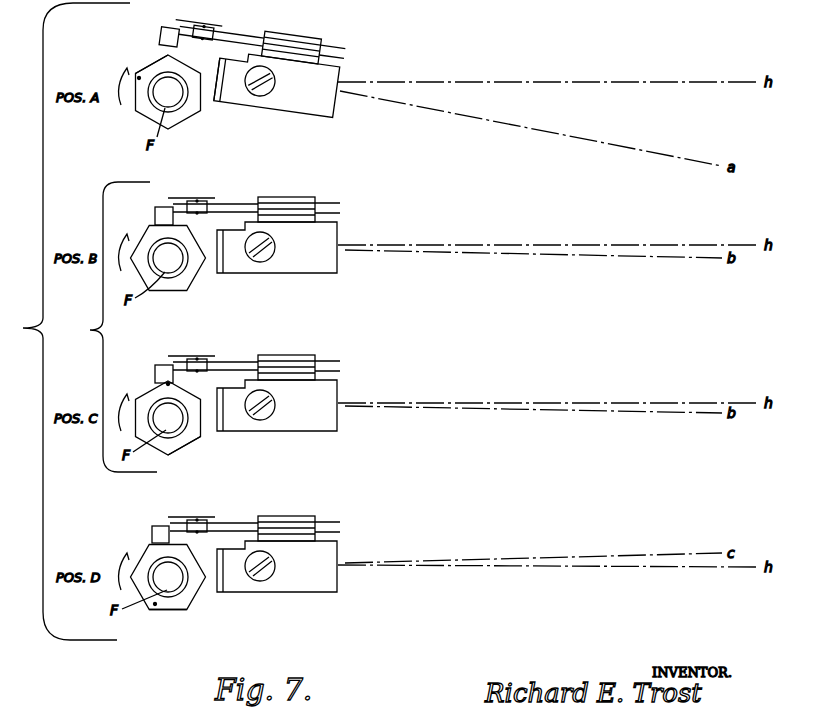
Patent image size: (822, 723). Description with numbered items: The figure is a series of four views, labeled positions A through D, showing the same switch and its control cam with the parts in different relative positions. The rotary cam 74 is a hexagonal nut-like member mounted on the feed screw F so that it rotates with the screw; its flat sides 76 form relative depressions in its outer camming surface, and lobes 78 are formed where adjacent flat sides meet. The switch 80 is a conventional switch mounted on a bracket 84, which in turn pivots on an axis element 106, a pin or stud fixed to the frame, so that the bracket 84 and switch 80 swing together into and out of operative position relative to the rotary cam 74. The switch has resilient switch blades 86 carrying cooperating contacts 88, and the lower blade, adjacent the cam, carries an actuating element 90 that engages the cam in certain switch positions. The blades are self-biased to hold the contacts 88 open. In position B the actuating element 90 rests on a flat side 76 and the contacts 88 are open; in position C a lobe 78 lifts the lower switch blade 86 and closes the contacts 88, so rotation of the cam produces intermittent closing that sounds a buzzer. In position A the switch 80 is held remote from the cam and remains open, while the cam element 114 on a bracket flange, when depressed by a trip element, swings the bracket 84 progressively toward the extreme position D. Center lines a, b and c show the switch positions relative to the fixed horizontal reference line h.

The rotary cam 74 is at (189, 127).
The flat sides 76 is at (152, 63).
The lobes 78 is at (139, 79).
The switch 80 is at (330, 39).
The bracket 84 is at (335, 118).
The switch blades 86 is at (258, 30).
The contacts 88 is at (216, 28).
The actuating element 90 is at (163, 33).
The axis element 106 is at (263, 97).
The cam element 114 is at (215, 98).